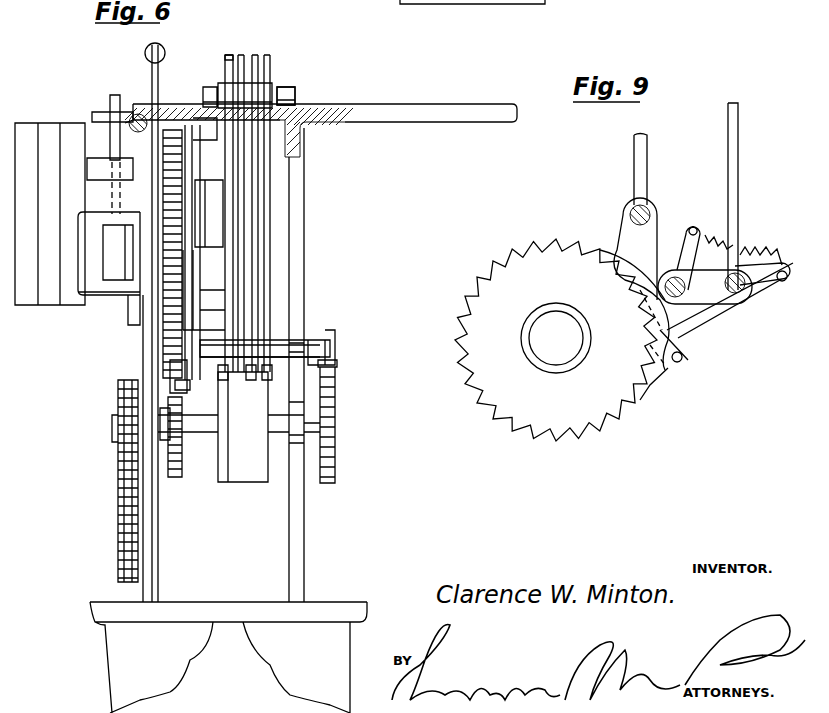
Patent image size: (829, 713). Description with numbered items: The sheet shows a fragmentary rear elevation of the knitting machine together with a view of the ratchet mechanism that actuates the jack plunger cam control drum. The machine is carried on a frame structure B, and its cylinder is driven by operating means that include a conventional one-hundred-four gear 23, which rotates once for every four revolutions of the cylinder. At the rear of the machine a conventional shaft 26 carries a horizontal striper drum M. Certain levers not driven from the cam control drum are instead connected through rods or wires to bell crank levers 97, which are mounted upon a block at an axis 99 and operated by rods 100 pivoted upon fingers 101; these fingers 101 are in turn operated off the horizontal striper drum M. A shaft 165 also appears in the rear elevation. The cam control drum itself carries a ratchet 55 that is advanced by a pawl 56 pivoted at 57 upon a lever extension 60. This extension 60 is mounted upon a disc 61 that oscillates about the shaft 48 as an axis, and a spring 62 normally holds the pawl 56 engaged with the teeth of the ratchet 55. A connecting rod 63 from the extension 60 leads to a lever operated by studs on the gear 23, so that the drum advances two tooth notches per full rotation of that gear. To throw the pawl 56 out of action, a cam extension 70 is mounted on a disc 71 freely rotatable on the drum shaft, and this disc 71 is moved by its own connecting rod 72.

In FIG. 6, the shaft 165 is at (158, 96).
In FIG. 6, the "104" gear 23 is at (165, 320).
In FIG. 6, the bell crank levers 97 is at (281, 58).
In FIG. 6, the axis 99 is at (280, 90).
In FIG. 6, the rods 100 is at (257, 295).
In FIG. 6, the fingers 101 is at (263, 370).
In FIG. 6, the shaft 26 is at (208, 428).
In FIG. 6, the horizontal striper drum M is at (258, 465).
In FIG. 6, the frame structure B is at (337, 640).
In FIG. 9, the ratchet 55 is at (507, 450).
In FIG. 9, the shaft 48 is at (553, 342).
In FIG. 9, the connecting rod 72 is at (647, 145).
In FIG. 9, the connecting rod 63 is at (738, 126).
In FIG. 9, the disc 61 is at (628, 262).
In FIG. 9, the disc 71 is at (650, 238).
In FIG. 9, the pivot 57 is at (705, 287).
In FIG. 9, the lever extension 60 is at (778, 282).
In FIG. 9, the pawl 56 is at (700, 328).
In FIG. 9, the spring 62 is at (728, 238).
In FIG. 9, the cam extension 70 is at (690, 352).